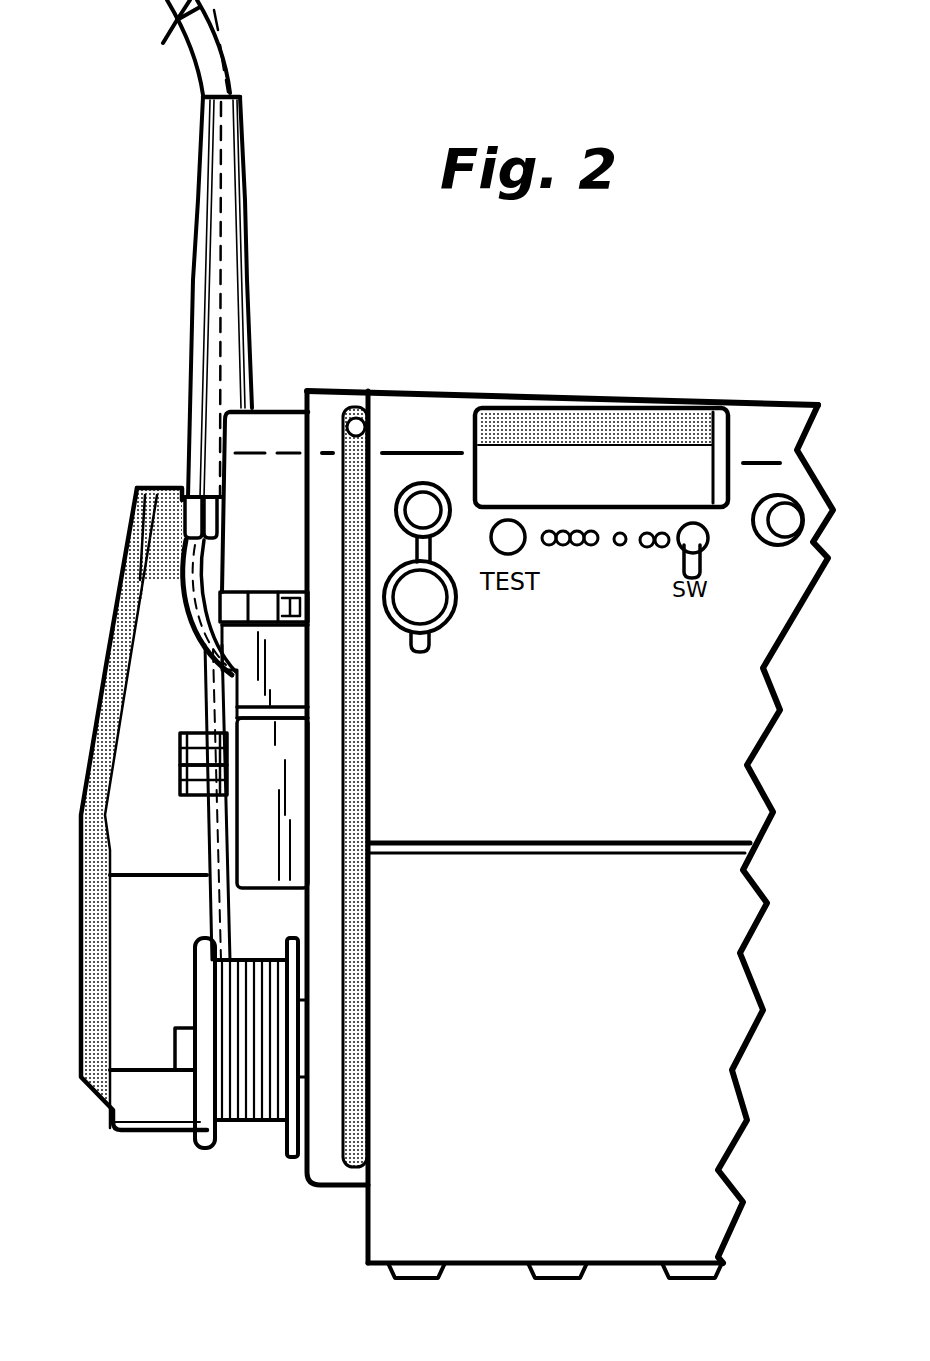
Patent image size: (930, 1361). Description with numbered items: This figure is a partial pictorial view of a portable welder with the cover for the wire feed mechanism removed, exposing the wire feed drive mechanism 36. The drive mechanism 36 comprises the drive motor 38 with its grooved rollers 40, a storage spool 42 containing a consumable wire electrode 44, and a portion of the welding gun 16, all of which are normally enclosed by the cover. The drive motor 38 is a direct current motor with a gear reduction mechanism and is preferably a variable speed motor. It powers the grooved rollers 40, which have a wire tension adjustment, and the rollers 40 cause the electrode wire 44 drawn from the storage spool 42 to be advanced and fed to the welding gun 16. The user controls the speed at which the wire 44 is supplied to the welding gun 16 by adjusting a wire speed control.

The welding gun 16 is at (220, 327).
The wire feed drive mechanism 36 is at (173, 755).
The drive motor 38 is at (296, 783).
The grooved rollers 40 is at (188, 807).
The storage spool 42 is at (205, 1143).
The consumable wire electrode 44 is at (243, 1122).